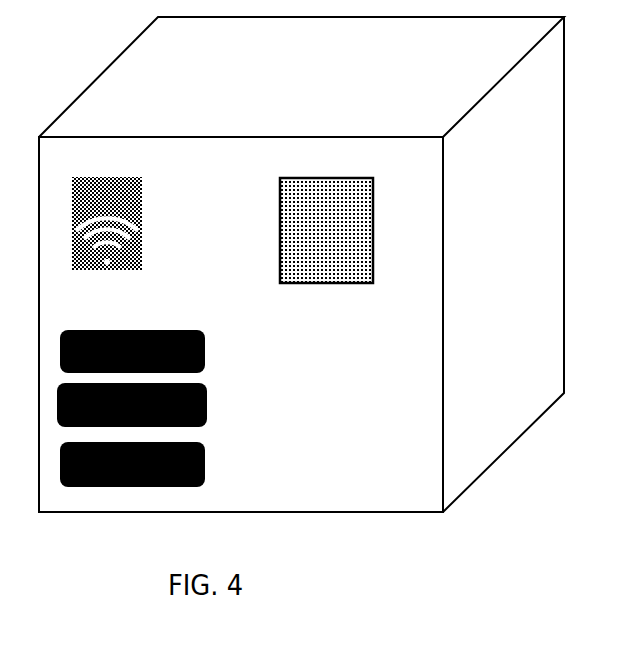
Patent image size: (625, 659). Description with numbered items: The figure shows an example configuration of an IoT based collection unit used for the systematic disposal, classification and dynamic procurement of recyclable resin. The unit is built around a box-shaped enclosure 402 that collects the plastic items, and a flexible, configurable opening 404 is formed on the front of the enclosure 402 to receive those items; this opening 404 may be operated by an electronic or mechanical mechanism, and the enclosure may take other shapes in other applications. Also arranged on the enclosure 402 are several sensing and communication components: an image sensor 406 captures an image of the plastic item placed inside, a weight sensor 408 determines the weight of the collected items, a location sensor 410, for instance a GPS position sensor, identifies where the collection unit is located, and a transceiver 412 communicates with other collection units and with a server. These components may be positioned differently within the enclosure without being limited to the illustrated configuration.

The enclosure 402 is at (306, 546).
The flexible/configurable opening 404 is at (375, 243).
The image sensor 406 is at (207, 398).
The weight sensor 408 is at (207, 352).
The location sensor 410 is at (210, 465).
The transceiver 412 is at (147, 228).